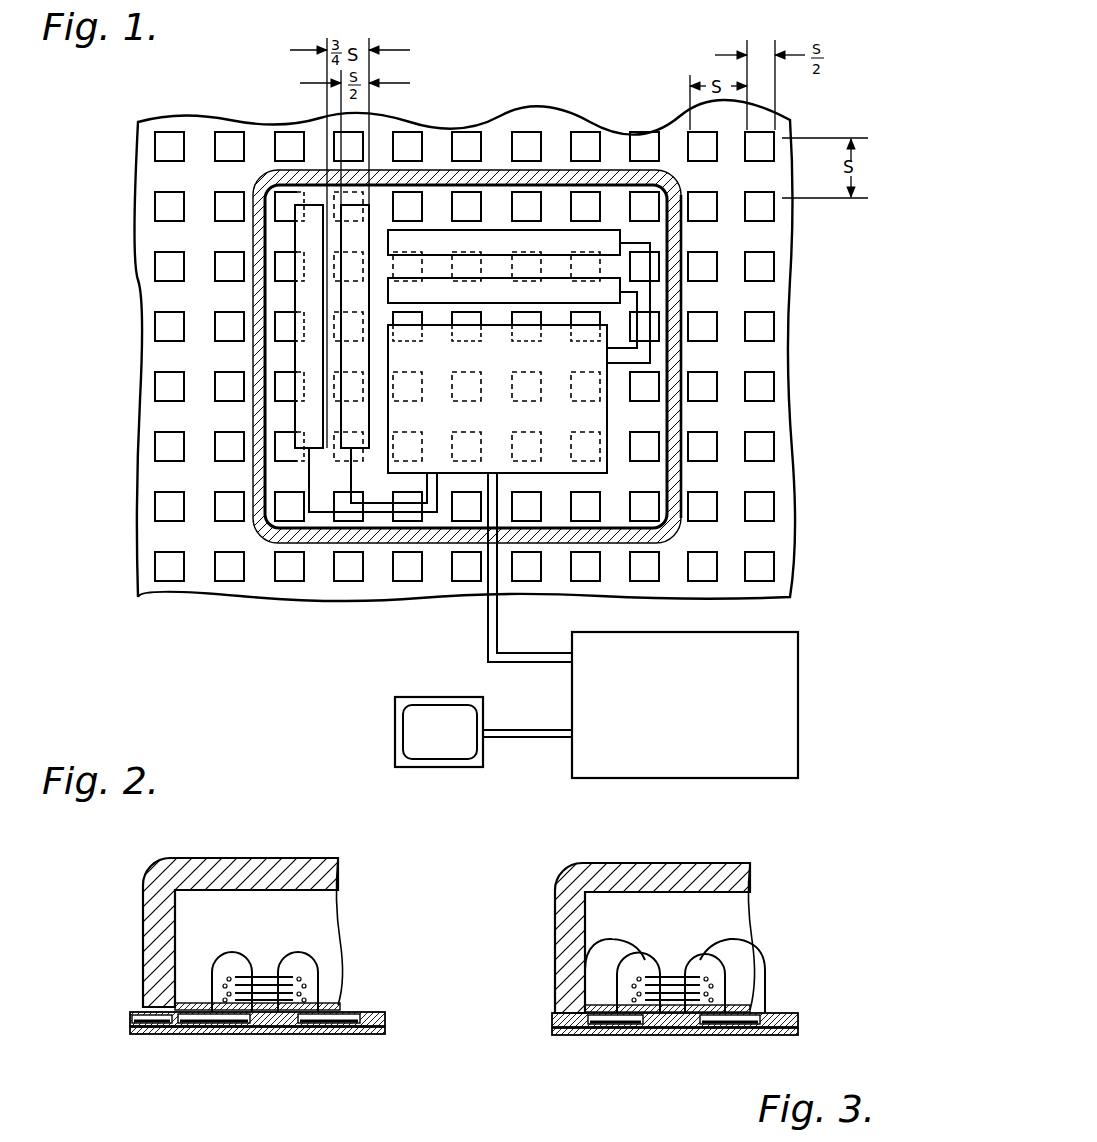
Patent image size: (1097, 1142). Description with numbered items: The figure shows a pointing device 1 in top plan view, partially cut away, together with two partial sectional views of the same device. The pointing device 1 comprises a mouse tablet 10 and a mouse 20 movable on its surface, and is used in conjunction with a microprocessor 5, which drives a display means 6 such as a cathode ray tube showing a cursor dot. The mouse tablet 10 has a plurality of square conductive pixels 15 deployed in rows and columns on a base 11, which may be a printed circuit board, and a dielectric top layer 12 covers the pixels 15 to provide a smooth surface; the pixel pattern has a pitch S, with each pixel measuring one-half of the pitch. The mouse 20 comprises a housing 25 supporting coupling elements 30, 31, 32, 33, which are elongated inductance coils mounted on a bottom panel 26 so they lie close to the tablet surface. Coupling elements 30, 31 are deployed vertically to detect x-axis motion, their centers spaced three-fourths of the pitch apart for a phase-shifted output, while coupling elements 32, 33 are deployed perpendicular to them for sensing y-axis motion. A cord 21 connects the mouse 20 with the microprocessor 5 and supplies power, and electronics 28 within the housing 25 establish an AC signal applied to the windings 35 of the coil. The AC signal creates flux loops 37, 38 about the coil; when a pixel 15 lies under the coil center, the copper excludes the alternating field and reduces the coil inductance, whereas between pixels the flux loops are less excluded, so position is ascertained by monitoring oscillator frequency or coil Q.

In FIG. 1, the pointing device 1 is at (130, 128).
In FIG. 2, the pointing device 1 is at (118, 856).
In FIG. 3, the pointing device 1 is at (535, 880).
In FIG. 1, the microprocessor 5 is at (786, 672).
In FIG. 1, the display means 6 is at (395, 730).
In FIG. 1, the mouse tablet 10 is at (136, 436).
In FIG. 1, the base 11 is at (385, 597).
In FIG. 2, the base 11 is at (257, 1030).
In FIG. 3, the base 11 is at (675, 1031).
In FIG. 2, the top layer 12 is at (388, 1012).
In FIG. 3, the top layer 12 is at (790, 1011).
In FIG. 1, the pixels 15 is at (163, 325).
In FIG. 2, the pixels 15 is at (136, 1022).
In FIG. 3, the pixels 15 is at (618, 1026).
In FIG. 1, the mouse 20 is at (262, 168).
In FIG. 2, the mouse 20 is at (251, 856).
In FIG. 3, the mouse 20 is at (700, 860).
In FIG. 1, the cord 21 is at (488, 618).
In FIG. 1, the housing 25 is at (676, 300).
In FIG. 2, the housing 25 is at (152, 906).
In FIG. 3, the housing 25 is at (750, 890).
In FIG. 2, the bottom panel 26 is at (342, 1006).
In FIG. 3, the bottom panel 26 is at (752, 1004).
In FIG. 1, the electronics 28 is at (598, 420).
In FIG. 1, the coupling element 30 is at (300, 237).
In FIG. 1, the coupling element 31 is at (346, 296).
In FIG. 1, the coupling element 32 is at (430, 278).
In FIG. 1, the coupling element 33 is at (556, 231).
In FIG. 2, the windings 35 is at (300, 978).
In FIG. 3, the windings 35 is at (672, 989).
In FIG. 2, the flux loop 37 is at (212, 956).
In FIG. 3, the flux loop 37 is at (612, 943).
In FIG. 2, the flux loop 38 is at (298, 956).
In FIG. 3, the flux loop 38 is at (735, 951).